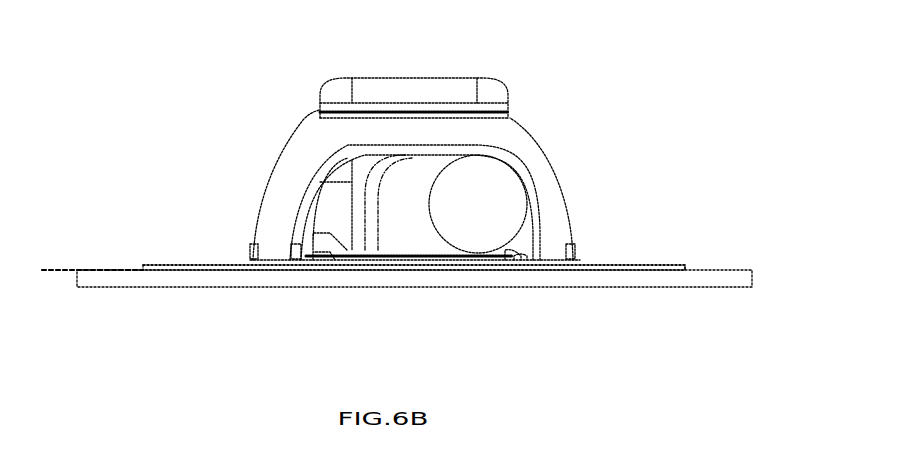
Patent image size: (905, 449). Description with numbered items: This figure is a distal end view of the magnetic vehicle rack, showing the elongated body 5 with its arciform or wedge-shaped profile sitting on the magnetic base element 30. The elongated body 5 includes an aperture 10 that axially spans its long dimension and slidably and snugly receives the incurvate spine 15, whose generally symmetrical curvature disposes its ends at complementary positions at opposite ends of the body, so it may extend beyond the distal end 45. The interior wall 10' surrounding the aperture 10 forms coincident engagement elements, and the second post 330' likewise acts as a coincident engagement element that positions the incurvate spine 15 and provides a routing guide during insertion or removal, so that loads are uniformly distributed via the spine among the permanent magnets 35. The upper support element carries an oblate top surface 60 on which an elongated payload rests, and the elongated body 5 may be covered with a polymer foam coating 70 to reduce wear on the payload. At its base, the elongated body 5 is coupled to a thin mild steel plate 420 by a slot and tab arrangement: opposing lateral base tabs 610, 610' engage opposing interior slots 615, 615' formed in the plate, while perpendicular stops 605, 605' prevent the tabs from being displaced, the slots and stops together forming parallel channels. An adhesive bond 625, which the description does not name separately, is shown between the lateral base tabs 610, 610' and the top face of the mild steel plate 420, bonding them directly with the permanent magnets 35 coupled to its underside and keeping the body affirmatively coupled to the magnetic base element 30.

The elongated body 5 is at (302, 215).
The aperture 10 is at (294, 202).
The interior wall 10' is at (425, 184).
The incurvate spine 15 is at (487, 214).
The base element 30 is at (762, 266).
The permanent magnet 35 is at (128, 280).
The distal end 45 is at (81, 270).
The oblate top surface 60 is at (455, 113).
The polymer foam coating 70 is at (313, 145).
The second post 330' is at (414, 98).
The mild steel plate 420 is at (653, 265).
The perpendicular stop 605 is at (222, 294).
The perpendicular stop 605' is at (619, 299).
The lateral base tab 610 is at (270, 294).
The lateral base tab 610' is at (551, 300).
The interior slot 615 is at (344, 299).
The interior slot 615' is at (477, 298).
The bond layer 625 is at (418, 262).